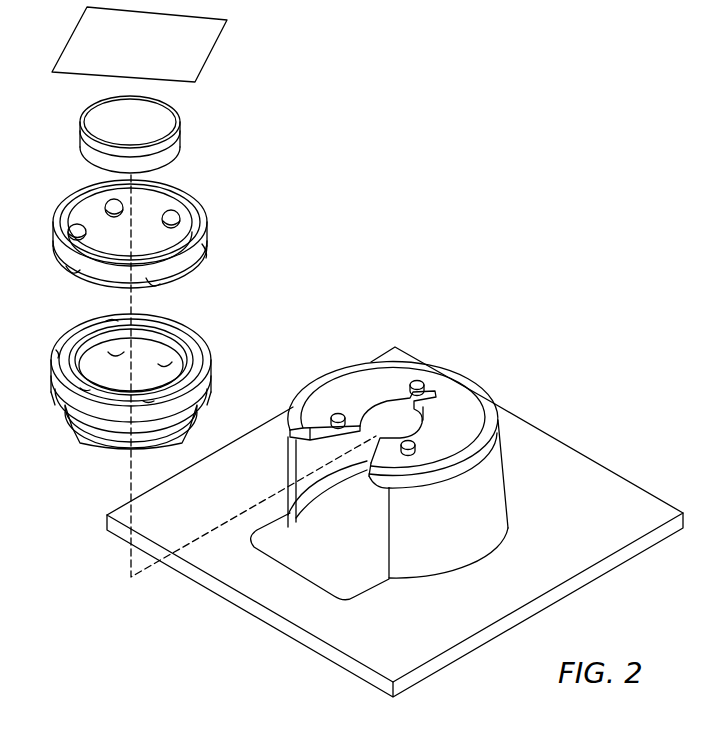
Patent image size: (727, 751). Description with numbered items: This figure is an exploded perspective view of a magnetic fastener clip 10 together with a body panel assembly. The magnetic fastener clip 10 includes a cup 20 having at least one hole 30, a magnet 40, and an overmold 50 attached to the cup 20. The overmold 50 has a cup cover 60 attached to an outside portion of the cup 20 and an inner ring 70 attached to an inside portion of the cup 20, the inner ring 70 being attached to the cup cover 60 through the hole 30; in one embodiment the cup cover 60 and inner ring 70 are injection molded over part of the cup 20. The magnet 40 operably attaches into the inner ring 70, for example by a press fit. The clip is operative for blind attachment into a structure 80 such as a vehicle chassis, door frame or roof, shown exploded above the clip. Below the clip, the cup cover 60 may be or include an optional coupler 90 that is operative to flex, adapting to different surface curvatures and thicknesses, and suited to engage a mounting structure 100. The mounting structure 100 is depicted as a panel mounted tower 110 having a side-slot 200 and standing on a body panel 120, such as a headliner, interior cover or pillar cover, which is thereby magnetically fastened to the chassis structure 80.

The magnetic fastener clip 10 is at (264, 236).
The cup 20 is at (150, 234).
The hole 30 is at (180, 213).
The magnet 40 is at (163, 120).
The overmold 50 is at (175, 396).
The cup cover 60 is at (150, 402).
The inner ring 70 is at (242, 388).
The structure 80 is at (71, 36).
The coupler 90 is at (103, 447).
The mounting structure 100 is at (395, 517).
The panel mounted tower 110 is at (401, 457).
The body panel 120 is at (618, 488).
The side-slot 200 is at (383, 412).